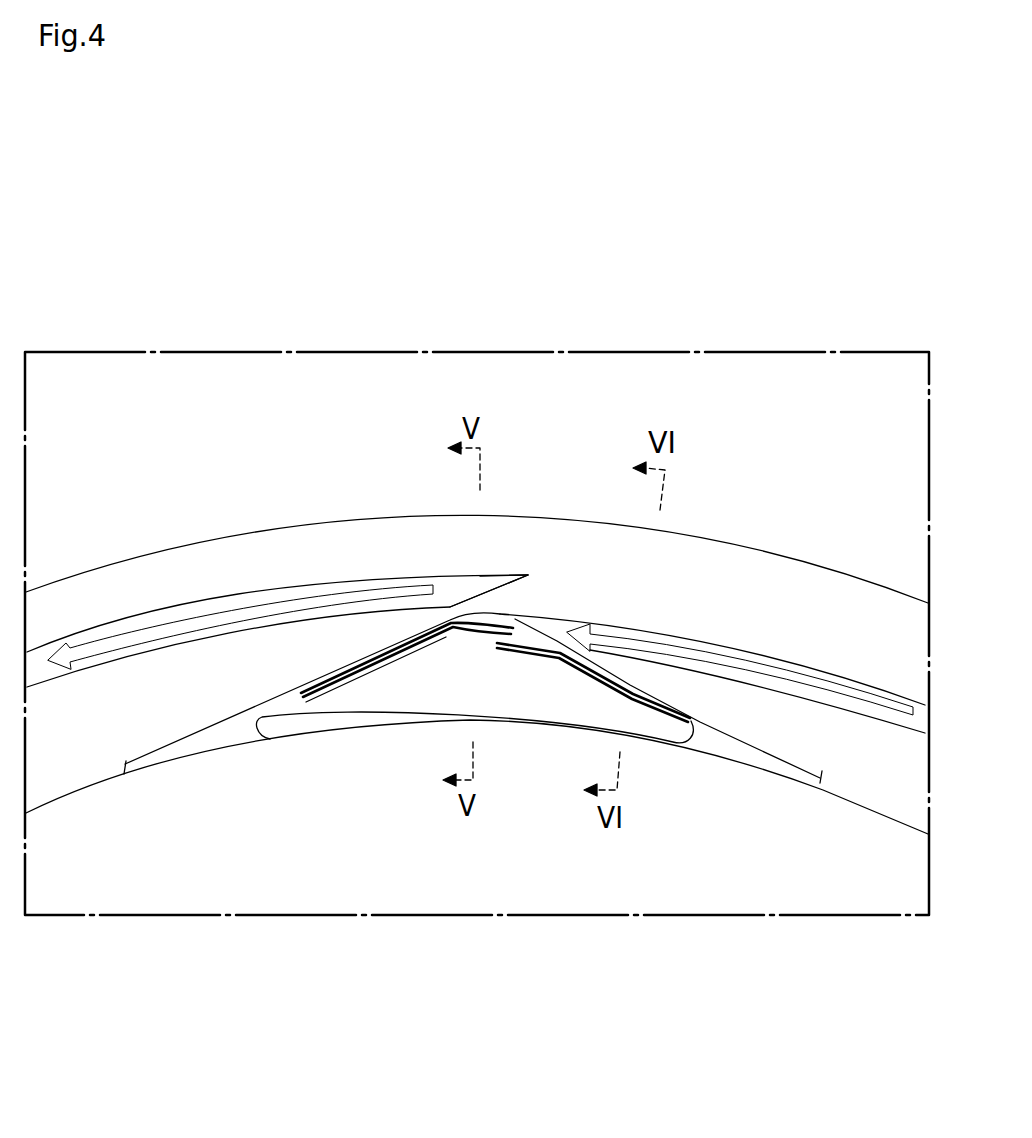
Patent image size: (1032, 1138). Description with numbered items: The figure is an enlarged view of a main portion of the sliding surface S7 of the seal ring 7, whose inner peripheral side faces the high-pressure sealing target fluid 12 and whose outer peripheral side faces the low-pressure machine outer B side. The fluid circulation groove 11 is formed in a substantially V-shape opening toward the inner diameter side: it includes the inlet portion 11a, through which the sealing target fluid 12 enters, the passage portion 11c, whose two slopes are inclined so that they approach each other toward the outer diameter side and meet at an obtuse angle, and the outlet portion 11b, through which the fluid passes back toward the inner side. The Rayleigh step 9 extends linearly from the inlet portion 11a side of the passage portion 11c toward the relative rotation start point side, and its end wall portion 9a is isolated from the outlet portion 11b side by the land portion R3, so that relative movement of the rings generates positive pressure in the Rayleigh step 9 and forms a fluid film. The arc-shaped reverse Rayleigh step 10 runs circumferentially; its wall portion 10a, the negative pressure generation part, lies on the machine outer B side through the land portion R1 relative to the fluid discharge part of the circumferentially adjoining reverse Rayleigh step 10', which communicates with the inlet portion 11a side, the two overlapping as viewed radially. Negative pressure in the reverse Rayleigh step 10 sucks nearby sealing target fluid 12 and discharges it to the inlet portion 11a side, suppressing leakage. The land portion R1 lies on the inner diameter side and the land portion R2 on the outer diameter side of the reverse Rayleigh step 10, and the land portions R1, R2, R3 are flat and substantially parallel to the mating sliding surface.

The seal ring 7 is at (783, 552).
The sliding surface S7 is at (710, 590).
The Rayleigh step 9 is at (470, 646).
The wall portion 9a is at (470, 646).
The reverse Rayleigh step 10 is at (277, 587).
The wall portion 10a is at (484, 594).
The reverse Rayleigh step 10' is at (712, 630).
The fluid circulation groove 11 is at (565, 990).
The inlet portion 11a is at (718, 747).
The outlet portion 11b is at (226, 728).
The passage portion 11c is at (563, 663).
The sealing target fluid 12 is at (839, 886).
The machine outer side B is at (170, 458).
The land portion R1 is at (86, 758).
The land portion R2 is at (290, 538).
The land portion R3 is at (330, 705).